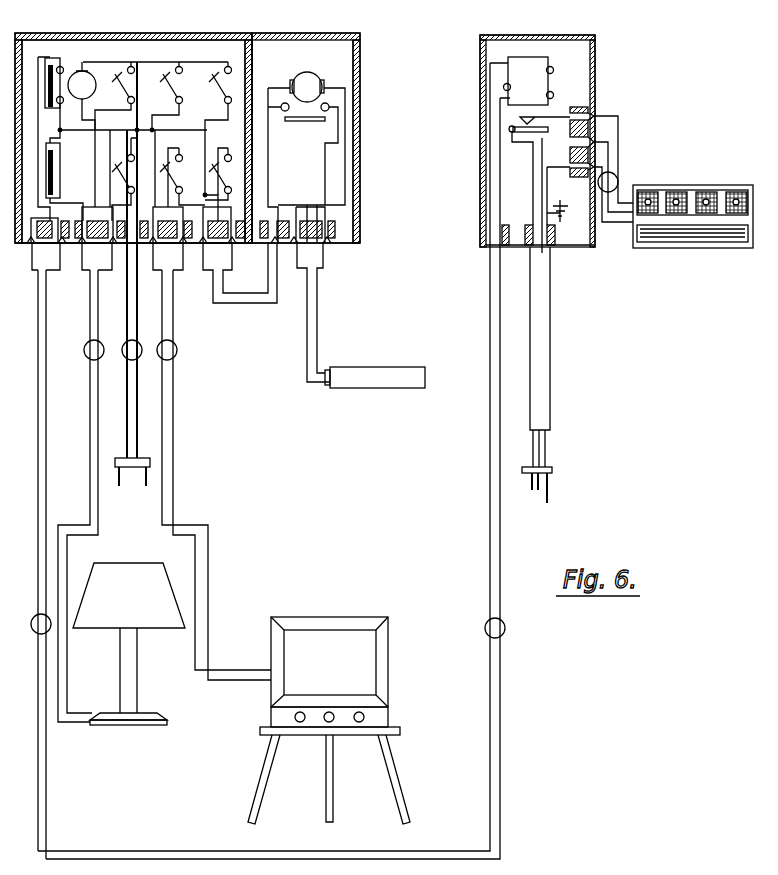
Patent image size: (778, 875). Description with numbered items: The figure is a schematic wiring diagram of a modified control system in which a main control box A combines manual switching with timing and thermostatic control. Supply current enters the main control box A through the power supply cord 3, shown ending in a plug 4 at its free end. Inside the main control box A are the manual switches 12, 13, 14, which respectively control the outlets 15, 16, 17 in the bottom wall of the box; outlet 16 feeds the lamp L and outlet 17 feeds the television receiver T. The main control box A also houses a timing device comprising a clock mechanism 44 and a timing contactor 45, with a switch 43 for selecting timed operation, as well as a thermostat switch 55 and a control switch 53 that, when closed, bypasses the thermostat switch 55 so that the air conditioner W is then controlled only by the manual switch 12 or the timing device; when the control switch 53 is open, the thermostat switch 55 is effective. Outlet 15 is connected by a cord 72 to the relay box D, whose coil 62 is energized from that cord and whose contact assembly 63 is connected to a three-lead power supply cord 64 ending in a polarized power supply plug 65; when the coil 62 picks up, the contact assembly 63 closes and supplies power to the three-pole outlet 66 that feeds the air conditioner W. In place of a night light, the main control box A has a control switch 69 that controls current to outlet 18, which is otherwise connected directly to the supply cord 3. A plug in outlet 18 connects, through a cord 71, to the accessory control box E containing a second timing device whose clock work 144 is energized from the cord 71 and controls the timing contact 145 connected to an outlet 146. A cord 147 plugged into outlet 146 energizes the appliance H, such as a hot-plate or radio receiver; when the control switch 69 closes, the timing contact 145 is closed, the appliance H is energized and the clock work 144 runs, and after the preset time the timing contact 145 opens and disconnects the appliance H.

The power supply cord 3 is at (127, 307).
The plug 4 is at (118, 460).
The manual switch 12 is at (124, 179).
The manual switch 13 is at (115, 96).
The manual switch 14 is at (165, 96).
The outlet 15 is at (48, 538).
The outlet 16 is at (91, 464).
The outlet 17 is at (205, 443).
The outlet 18 is at (222, 236).
The switch 43 is at (227, 174).
The electric clock mechanism 44 is at (78, 92).
The timing contactor 45 is at (47, 85).
The control switch 53 is at (182, 177).
The thermostat switch 55 is at (55, 172).
The coil 62 is at (525, 85).
The contact assembly 63 is at (545, 128).
The three-lead power supply cord 64 is at (543, 338).
The polarized power supply plug 65 is at (550, 470).
The three-pole outlet 66 is at (600, 122).
The control switch 69 is at (216, 141).
The cord 71 is at (243, 308).
The cord 72 is at (38, 800).
The clock work 144 is at (314, 72).
The timing contact 145 is at (316, 121).
The outlet 146 is at (327, 243).
The cord 147 is at (309, 300).
The main control box A is at (175, 35).
The accessory control box E is at (310, 34).
The relay box D is at (575, 35).
The air conditioner W is at (682, 174).
The appliance H is at (425, 377).
The television receiver T is at (362, 622).
The lamp L is at (140, 655).